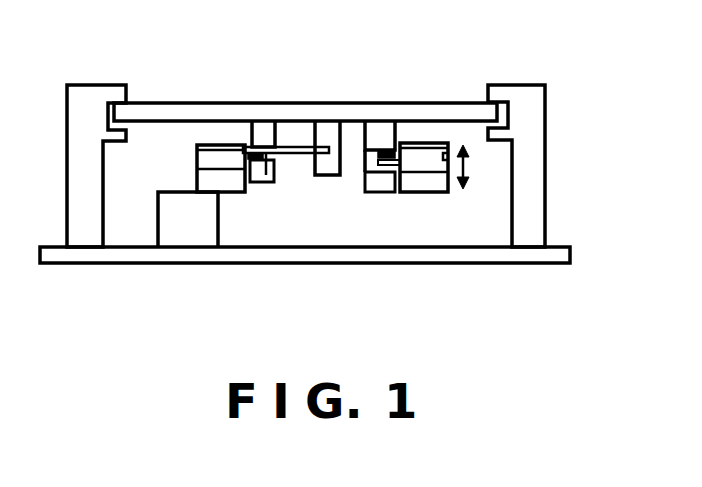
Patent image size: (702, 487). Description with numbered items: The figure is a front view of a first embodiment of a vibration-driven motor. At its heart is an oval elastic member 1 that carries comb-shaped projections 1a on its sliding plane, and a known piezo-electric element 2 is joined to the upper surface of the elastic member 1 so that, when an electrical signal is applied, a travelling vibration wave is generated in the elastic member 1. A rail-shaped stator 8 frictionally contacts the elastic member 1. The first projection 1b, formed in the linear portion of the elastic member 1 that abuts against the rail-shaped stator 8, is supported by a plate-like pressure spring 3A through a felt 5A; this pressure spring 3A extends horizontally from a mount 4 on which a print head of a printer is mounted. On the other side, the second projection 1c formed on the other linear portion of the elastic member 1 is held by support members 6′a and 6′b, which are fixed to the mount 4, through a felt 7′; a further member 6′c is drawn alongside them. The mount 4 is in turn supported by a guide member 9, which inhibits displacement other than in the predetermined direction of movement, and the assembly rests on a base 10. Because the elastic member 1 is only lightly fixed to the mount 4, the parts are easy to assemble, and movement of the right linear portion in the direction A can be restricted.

The oval elastic member 1 is at (452, 150).
The comb-shaped projections 1a is at (433, 194).
The first projection 1b is at (260, 183).
The second projection 1c is at (363, 194).
The piezo-electric element 2 is at (425, 145).
The plate-like pressure spring 3A is at (298, 138).
The mount 4 is at (338, 113).
The felt 5A is at (275, 163).
The support member 6′a is at (380, 130).
The support member 6′b is at (367, 194).
The left hanging member 6′c is at (260, 137).
The felt 7′ is at (376, 154).
The rail-shaped stator 8 is at (185, 230).
The guide member 9 is at (542, 133).
The base plate 10 is at (490, 250).
The direction A is at (476, 167).